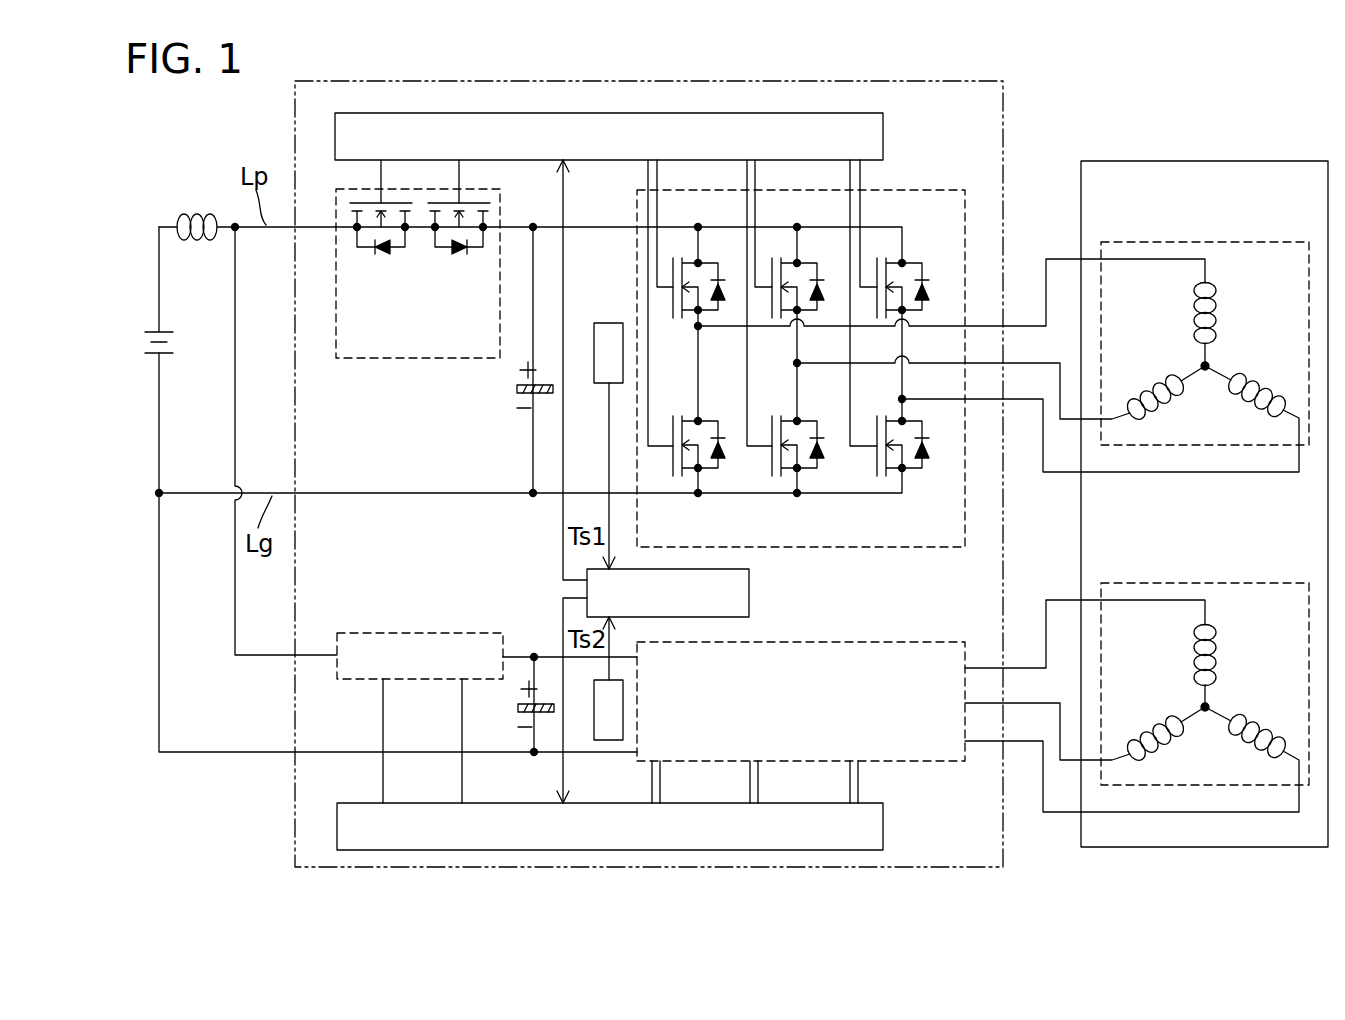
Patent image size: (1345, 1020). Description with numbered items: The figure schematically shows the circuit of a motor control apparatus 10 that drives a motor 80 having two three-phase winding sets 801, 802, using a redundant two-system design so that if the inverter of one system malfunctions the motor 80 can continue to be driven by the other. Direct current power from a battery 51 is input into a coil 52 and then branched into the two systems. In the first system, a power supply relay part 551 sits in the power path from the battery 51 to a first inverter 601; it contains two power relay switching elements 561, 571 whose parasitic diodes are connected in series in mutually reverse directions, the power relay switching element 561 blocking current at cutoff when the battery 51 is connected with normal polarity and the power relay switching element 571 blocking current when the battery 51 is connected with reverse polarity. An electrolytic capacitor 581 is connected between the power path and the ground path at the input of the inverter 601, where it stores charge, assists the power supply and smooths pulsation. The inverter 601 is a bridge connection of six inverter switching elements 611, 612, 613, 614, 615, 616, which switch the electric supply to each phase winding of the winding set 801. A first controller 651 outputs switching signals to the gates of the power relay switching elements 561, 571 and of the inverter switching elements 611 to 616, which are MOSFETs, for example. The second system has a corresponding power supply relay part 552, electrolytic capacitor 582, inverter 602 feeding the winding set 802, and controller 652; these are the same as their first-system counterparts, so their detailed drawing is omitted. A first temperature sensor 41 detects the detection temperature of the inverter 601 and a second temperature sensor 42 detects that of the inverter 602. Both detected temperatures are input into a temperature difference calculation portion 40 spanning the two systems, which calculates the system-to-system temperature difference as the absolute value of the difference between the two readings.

The motor control apparatus 10 is at (294, 112).
The battery 51 is at (150, 330).
The coil 52 is at (197, 212).
The power supply relay part 551 is at (415, 365).
The power supply relay part 552 is at (416, 631).
The power relay switching element 561 is at (382, 253).
The power relay switching element 571 is at (460, 253).
The electrolytic capacitor 581 is at (517, 390).
The electrolytic capacitor 582 is at (518, 708).
The first temperature sensor 41 is at (609, 322).
The second temperature sensor 42 is at (610, 741).
The temperature difference calculation portion 40 is at (749, 593).
The inverter 601 is at (889, 548).
The inverter 602 is at (921, 641).
The inverter switching element 611 is at (701, 263).
The inverter switching element 612 is at (800, 263).
The inverter switching element 613 is at (909, 262).
The inverter switching element 614 is at (702, 420).
The inverter switching element 615 is at (801, 420).
The inverter switching element 616 is at (925, 462).
The controller 651 is at (883, 136).
The controller 652 is at (883, 830).
The motor 80 is at (1200, 160).
The winding set 801 is at (1149, 240).
The winding set 802 is at (1149, 581).